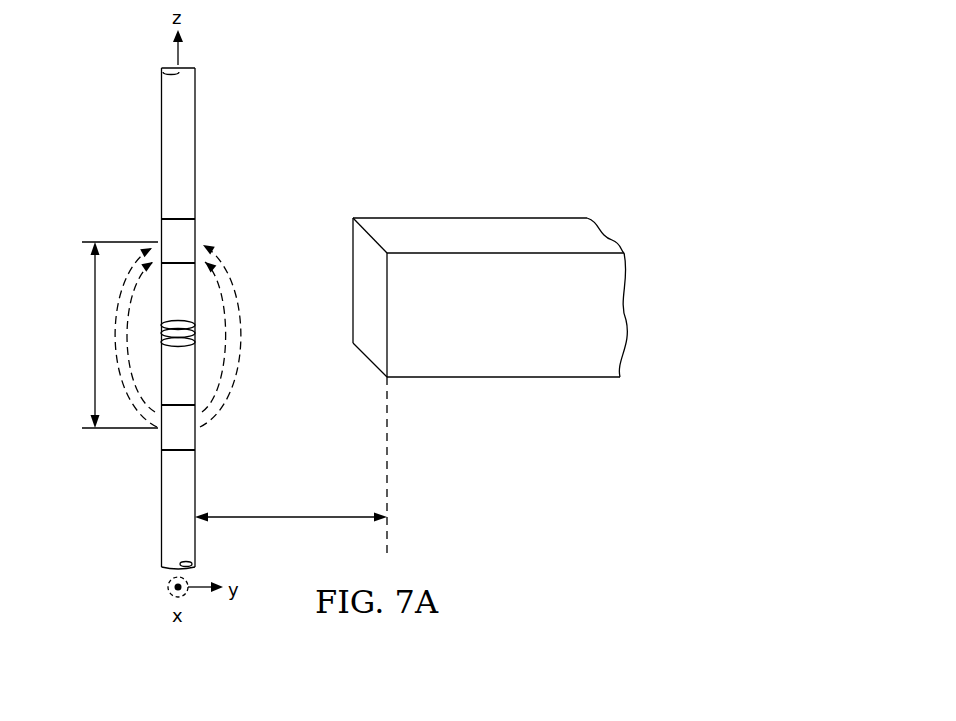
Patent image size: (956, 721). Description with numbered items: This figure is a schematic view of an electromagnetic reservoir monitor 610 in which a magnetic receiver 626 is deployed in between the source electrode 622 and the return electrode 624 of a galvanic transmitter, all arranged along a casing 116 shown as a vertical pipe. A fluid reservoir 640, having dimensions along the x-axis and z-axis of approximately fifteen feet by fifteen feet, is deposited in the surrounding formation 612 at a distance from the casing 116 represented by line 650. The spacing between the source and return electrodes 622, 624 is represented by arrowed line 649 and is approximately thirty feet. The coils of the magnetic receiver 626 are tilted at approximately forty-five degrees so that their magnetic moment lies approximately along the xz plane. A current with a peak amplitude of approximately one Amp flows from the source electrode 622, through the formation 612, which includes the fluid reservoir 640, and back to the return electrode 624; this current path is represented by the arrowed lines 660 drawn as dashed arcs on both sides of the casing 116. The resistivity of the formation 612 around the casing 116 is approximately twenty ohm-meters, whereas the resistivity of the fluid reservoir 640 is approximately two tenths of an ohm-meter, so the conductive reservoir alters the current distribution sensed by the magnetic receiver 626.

The casing 116 is at (161, 118).
The electromagnetic reservoir monitor 610 is at (311, 194).
The formation 612 is at (499, 447).
The source electrode 622 is at (187, 440).
The return electrode 624 is at (185, 228).
The magnetic receiver 626 is at (182, 348).
The fluid reservoir 640 is at (468, 218).
The arrowed line 649 is at (93, 367).
The line 650 is at (292, 520).
The arrowed lines 660 is at (242, 330).